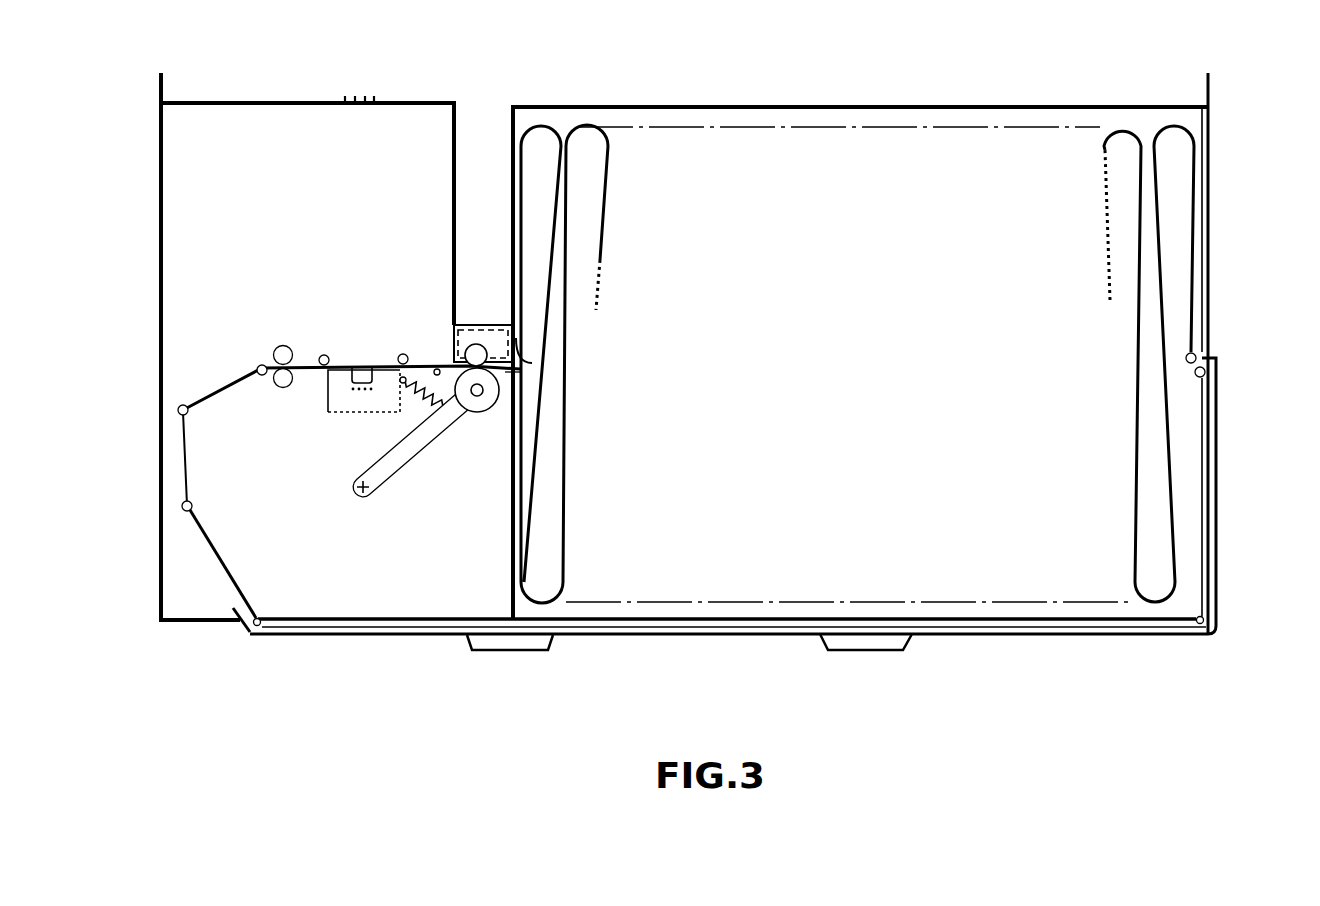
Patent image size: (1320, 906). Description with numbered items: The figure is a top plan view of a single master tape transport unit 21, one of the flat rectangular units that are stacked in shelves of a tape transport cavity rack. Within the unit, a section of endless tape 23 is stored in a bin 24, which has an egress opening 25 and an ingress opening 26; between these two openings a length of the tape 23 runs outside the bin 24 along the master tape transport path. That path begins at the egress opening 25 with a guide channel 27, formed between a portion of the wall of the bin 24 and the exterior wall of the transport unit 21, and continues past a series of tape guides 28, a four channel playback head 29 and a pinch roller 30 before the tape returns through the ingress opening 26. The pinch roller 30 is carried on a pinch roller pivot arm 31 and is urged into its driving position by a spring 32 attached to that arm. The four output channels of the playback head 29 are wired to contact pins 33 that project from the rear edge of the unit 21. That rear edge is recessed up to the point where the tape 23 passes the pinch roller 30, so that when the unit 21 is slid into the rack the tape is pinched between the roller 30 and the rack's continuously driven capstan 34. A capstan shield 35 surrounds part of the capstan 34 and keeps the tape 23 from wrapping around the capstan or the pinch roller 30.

The master tape transport unit 21 is at (1190, 635).
The endless tape 23 is at (1160, 275).
The bin 24 is at (1043, 107).
The egress opening 25 is at (1210, 360).
The ingress opening 26 is at (537, 383).
The guide channel 27 is at (945, 637).
The tape guides 28 is at (262, 378).
The four channel playback head 29 is at (332, 412).
The pinch roller 30 is at (478, 416).
The pinch roller pivot arm 31 is at (403, 462).
The spring 32 is at (420, 410).
The contact pins 33 is at (376, 100).
The capstan 34 is at (464, 351).
The capstan shield 35 is at (478, 325).